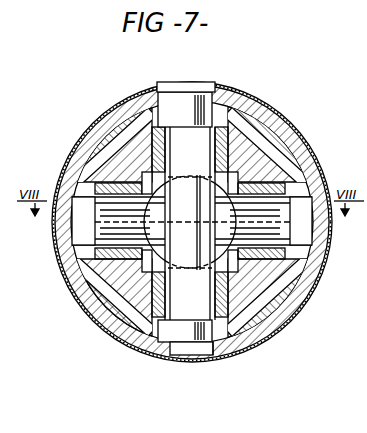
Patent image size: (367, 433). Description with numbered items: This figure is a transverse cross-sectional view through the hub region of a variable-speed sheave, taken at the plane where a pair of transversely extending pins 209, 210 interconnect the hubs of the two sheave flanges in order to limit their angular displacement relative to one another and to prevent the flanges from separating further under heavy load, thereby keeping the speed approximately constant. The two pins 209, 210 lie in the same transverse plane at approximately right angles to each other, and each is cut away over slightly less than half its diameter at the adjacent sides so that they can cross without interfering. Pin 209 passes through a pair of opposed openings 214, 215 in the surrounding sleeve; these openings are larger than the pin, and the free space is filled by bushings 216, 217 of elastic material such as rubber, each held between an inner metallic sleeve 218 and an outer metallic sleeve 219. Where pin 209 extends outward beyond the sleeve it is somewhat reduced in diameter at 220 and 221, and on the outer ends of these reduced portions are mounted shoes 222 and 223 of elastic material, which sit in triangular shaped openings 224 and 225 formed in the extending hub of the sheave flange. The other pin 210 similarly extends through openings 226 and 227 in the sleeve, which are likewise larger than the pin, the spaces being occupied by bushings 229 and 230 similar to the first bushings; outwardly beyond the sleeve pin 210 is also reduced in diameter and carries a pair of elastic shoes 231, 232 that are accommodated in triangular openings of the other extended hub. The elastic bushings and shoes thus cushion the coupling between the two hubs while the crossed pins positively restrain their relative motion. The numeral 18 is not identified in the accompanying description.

The housing 18 is at (366, 97).
The pin 209 is at (210, 117).
The pin 210 is at (283, 202).
The opening 214 is at (252, 128).
The opening 215 is at (110, 306).
The bushing 216 is at (160, 150).
The bushing 217 is at (122, 344).
The inner metallic sleeve 218 is at (162, 166).
The outer metallic sleeve 219 is at (122, 181).
The reduced portion 220 is at (186, 112).
The reduced portion 221 is at (152, 352).
The shoe 222 is at (172, 98).
The shoe 223 is at (196, 350).
The triangular shaped opening 224 is at (214, 92).
The triangular shaped opening 225 is at (222, 352).
The opening 226 is at (115, 173).
The opening 227 is at (274, 274).
The bushing 229 is at (92, 262).
The bushing 230 is at (282, 167).
The shoe 231 is at (66, 234).
The shoe 232 is at (316, 230).